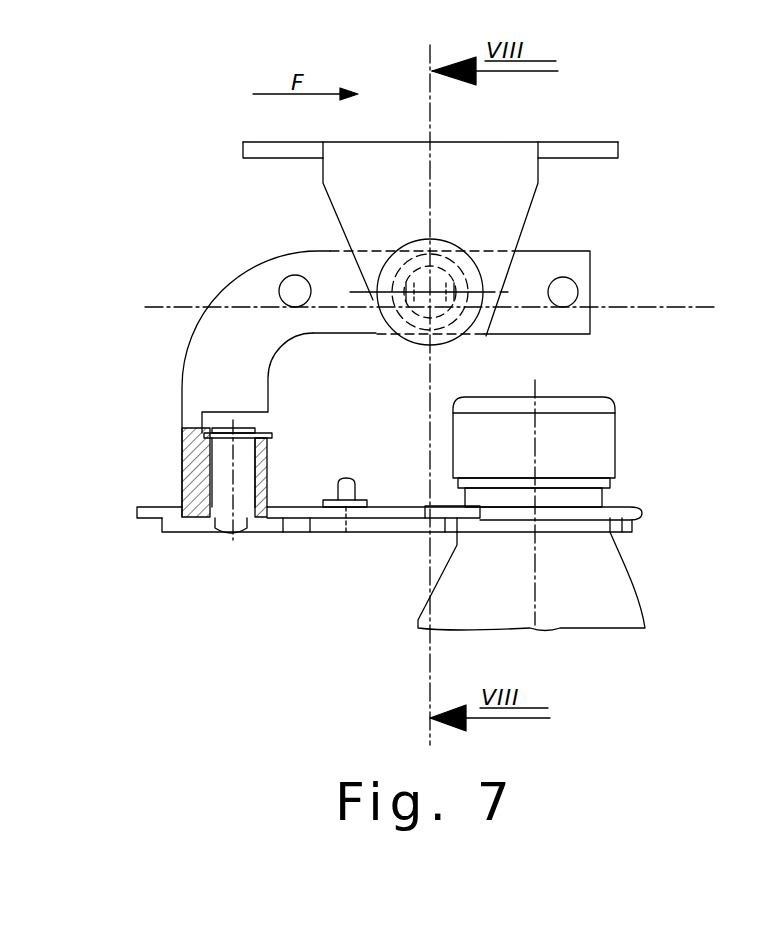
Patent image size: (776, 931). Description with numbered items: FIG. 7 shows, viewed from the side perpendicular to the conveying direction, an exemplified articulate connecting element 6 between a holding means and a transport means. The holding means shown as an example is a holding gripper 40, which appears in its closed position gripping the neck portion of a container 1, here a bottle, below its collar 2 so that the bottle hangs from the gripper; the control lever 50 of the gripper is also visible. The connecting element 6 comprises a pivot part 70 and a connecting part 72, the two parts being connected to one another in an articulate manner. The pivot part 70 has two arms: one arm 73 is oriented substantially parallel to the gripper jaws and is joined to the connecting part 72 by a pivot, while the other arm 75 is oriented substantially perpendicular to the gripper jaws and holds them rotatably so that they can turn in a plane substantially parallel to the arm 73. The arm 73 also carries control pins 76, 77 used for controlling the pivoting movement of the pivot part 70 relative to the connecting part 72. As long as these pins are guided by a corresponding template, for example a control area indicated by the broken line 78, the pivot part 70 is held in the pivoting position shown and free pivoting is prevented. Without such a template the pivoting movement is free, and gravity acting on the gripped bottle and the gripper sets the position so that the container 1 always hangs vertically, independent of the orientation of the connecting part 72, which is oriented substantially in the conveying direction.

The container 1 is at (608, 585).
The collar 2 is at (620, 510).
The connecting element 6 is at (216, 261).
The holding gripper 40 is at (643, 530).
The control lever 50 is at (378, 500).
The pivot part 70 is at (201, 297).
The connecting part 72 is at (505, 158).
The arm 73 is at (518, 318).
The arm 75 is at (215, 353).
The control pin 76 is at (294, 288).
The control pin 77 is at (568, 287).
The broken line 78 is at (692, 308).